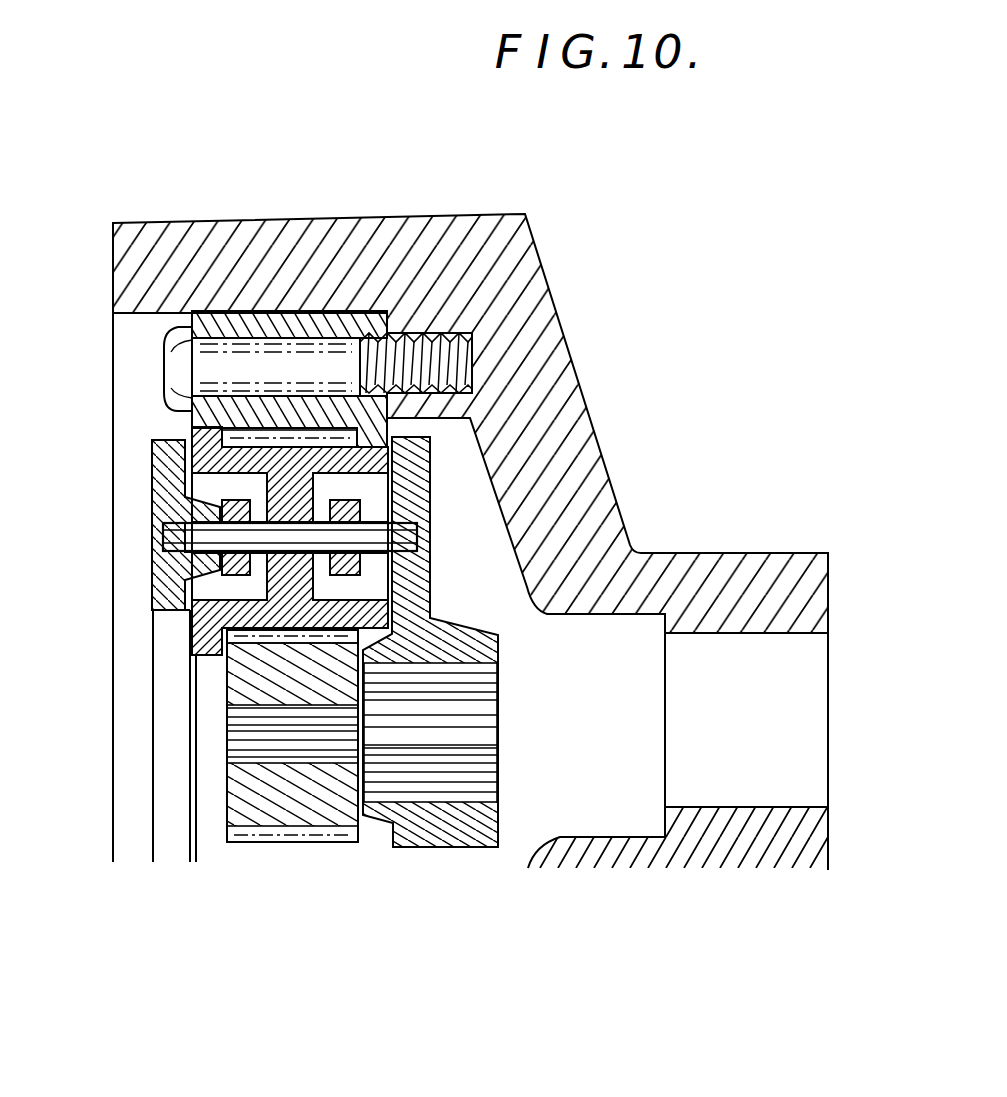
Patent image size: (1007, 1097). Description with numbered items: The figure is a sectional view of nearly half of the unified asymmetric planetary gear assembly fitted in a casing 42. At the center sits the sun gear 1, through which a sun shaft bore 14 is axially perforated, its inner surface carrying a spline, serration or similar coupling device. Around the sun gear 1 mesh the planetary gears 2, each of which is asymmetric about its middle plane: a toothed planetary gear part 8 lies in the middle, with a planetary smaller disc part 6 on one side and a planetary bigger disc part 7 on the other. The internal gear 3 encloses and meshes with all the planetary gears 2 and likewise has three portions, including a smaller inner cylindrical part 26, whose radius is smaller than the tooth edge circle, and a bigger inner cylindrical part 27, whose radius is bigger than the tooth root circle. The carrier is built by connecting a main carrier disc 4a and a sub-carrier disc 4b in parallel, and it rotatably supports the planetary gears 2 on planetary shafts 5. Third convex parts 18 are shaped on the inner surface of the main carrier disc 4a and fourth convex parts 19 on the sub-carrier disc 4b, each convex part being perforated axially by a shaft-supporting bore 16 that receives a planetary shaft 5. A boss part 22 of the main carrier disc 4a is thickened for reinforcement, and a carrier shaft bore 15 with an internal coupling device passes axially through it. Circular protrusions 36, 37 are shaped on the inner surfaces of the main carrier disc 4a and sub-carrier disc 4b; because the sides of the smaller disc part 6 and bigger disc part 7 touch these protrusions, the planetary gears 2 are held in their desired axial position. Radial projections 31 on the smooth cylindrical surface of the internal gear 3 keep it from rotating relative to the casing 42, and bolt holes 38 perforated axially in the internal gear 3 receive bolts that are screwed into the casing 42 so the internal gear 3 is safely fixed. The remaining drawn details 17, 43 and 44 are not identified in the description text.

The sun gear 1 is at (318, 790).
The planetary gear 2 is at (430, 486).
The internal gear 3 is at (168, 333).
The main carrier disc 4a is at (430, 590).
The sub-carrier disc 4b is at (152, 600).
The planetary shaft 5 is at (170, 537).
The planetary smaller disc part 6 is at (470, 383).
The planetary bigger disc part 7 is at (152, 441).
The planetary gear part 8 is at (225, 664).
The sun shaft bore 14 is at (268, 735).
The carrier shaft bore 15 is at (440, 727).
The shaft-supporting bore 16 is at (430, 545).
The shaft 17 is at (165, 612).
The third convex part 18 is at (430, 497).
The fourth convex part 19 is at (152, 565).
The boss part 22 is at (388, 817).
The smaller inner cylindrical part 26 is at (380, 395).
The bigger inner cylindrical part 27 is at (166, 385).
The radial projection 31 is at (190, 330).
The circular protrusion 36 is at (393, 425).
The circular protrusion 37 is at (152, 470).
The bolt hole 38 is at (362, 311).
The casing 42 is at (300, 222).
The threaded portion 43 is at (410, 340).
The housing wall 44 is at (170, 335).